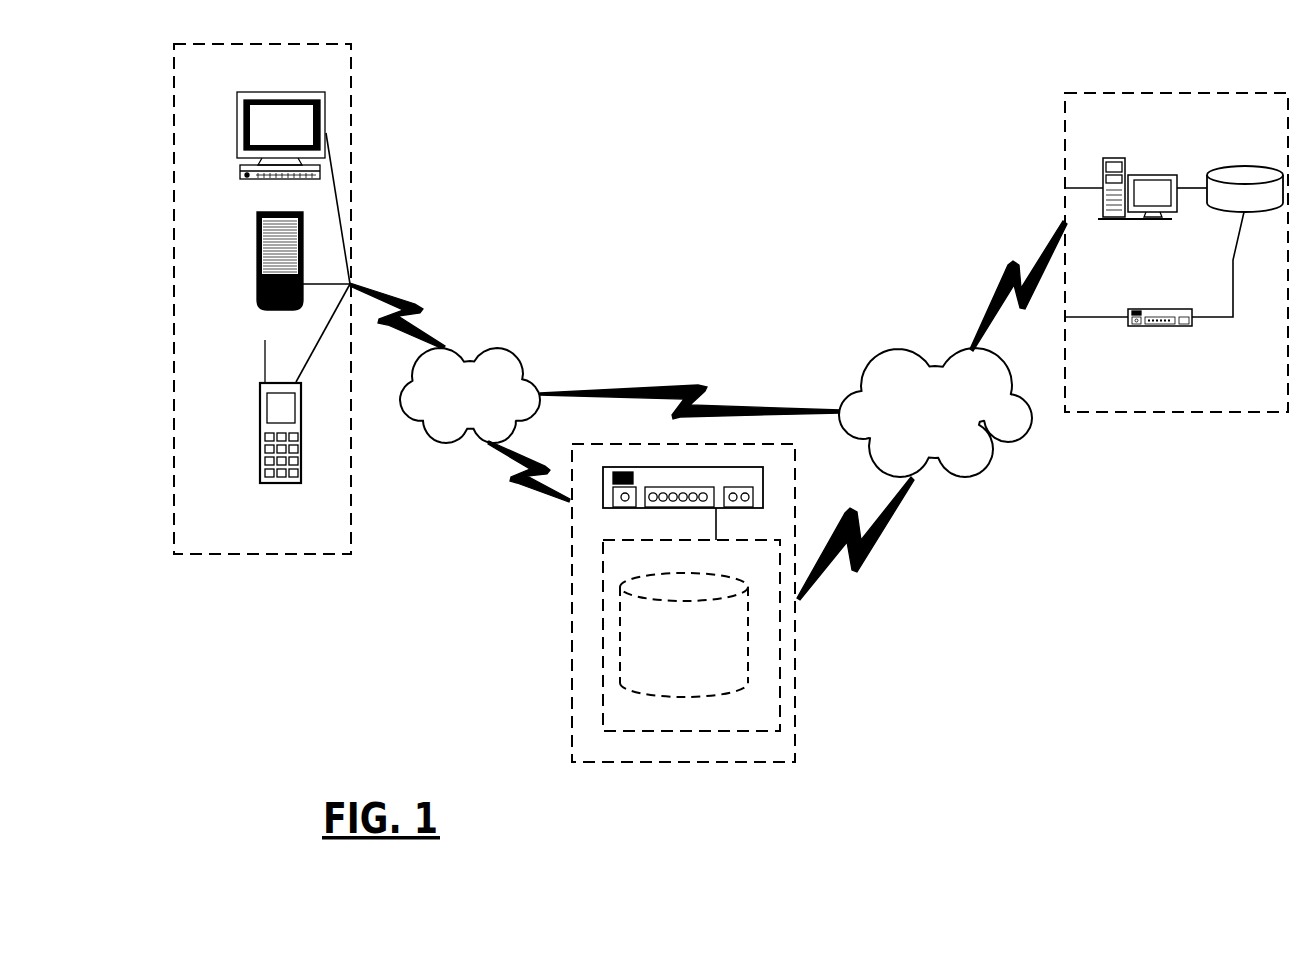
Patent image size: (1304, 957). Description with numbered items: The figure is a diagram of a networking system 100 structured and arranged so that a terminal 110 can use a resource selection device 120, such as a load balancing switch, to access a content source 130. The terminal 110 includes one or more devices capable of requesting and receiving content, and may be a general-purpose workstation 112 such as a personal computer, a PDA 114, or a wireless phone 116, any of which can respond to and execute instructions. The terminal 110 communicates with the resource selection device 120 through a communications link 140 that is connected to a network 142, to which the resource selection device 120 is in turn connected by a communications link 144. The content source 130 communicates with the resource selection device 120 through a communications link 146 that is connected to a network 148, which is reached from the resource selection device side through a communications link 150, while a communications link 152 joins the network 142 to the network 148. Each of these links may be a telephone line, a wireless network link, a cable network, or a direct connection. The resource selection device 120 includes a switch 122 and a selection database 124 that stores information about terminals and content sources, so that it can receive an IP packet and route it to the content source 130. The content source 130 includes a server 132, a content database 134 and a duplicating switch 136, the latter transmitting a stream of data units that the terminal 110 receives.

The networking system 100 is at (731, 422).
The terminal 110 is at (325, 556).
The workstation 112 is at (238, 135).
The PDA 114 is at (258, 259).
The wireless phone 116 is at (266, 407).
The resource selection device 120 is at (796, 731).
The switch 122 is at (601, 490).
The selection database 124 is at (620, 634).
The content source 130 is at (1222, 92).
The server 132 is at (1127, 157).
The content database 134 is at (1236, 162).
The duplicating switch 136 is at (1163, 305).
The communications link 140 is at (413, 306).
The network 142 is at (510, 353).
The communications link 144 is at (530, 462).
The communications link 146 is at (1003, 283).
The network 148 is at (873, 368).
The communications link 150 is at (868, 548).
The communications link 152 is at (705, 390).